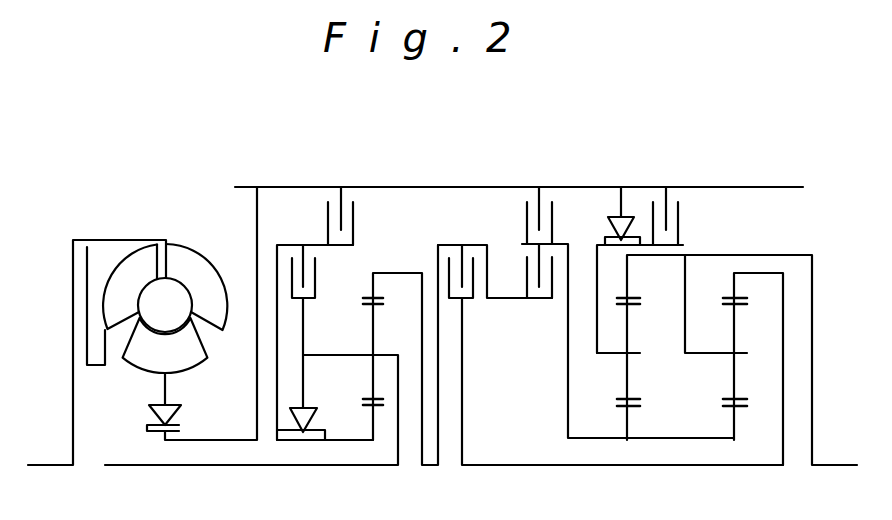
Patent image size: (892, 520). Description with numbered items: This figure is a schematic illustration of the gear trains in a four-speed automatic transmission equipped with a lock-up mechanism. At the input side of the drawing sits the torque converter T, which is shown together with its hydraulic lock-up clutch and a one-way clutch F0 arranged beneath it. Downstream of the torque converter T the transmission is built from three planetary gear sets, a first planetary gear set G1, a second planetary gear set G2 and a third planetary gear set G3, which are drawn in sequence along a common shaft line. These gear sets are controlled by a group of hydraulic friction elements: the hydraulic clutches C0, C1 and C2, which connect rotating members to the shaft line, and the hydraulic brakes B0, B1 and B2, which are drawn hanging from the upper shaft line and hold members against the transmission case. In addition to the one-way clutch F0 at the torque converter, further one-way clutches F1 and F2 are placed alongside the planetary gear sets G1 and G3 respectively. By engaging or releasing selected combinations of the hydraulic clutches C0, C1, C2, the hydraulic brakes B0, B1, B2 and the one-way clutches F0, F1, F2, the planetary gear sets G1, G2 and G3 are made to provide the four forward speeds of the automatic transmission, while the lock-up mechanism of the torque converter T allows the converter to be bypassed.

The torque converter T is at (190, 246).
The one-way clutch F0 is at (177, 417).
The hydraulic clutch C0 is at (295, 240).
The hydraulic brake B0 is at (360, 228).
The one-way clutch F1 is at (316, 425).
The planetary gear set G1 is at (370, 341).
The hydraulic clutch C1 is at (451, 240).
The hydraulic brake B1 is at (519, 229).
The hydraulic clutch C2 is at (542, 305).
The one-way clutch F2 is at (614, 237).
The hydraulic brake B2 is at (685, 226).
The planetary gear set G2 is at (612, 377).
The planetary gear set G3 is at (725, 368).